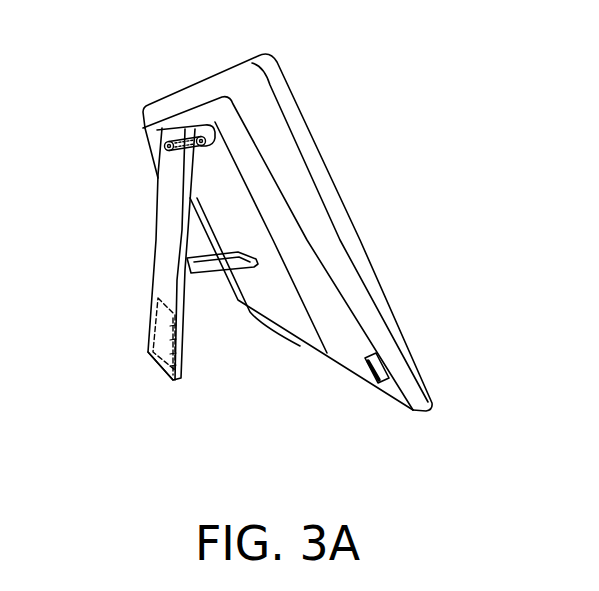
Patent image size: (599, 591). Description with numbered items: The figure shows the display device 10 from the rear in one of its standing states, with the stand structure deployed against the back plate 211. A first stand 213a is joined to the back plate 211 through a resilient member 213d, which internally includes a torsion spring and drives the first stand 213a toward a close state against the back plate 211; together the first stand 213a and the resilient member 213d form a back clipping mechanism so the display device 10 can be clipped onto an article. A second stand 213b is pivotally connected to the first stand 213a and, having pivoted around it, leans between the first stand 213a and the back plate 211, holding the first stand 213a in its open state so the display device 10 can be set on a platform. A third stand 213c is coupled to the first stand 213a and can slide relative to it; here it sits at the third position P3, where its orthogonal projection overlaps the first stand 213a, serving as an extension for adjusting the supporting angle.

The display device 10 is at (503, 479).
The back plate 211 is at (305, 330).
The first stand 213a is at (163, 200).
The second stand 213b is at (200, 275).
The third stand 213c is at (153, 330).
The resilient member 213d is at (216, 132).
The third position P3 is at (157, 365).